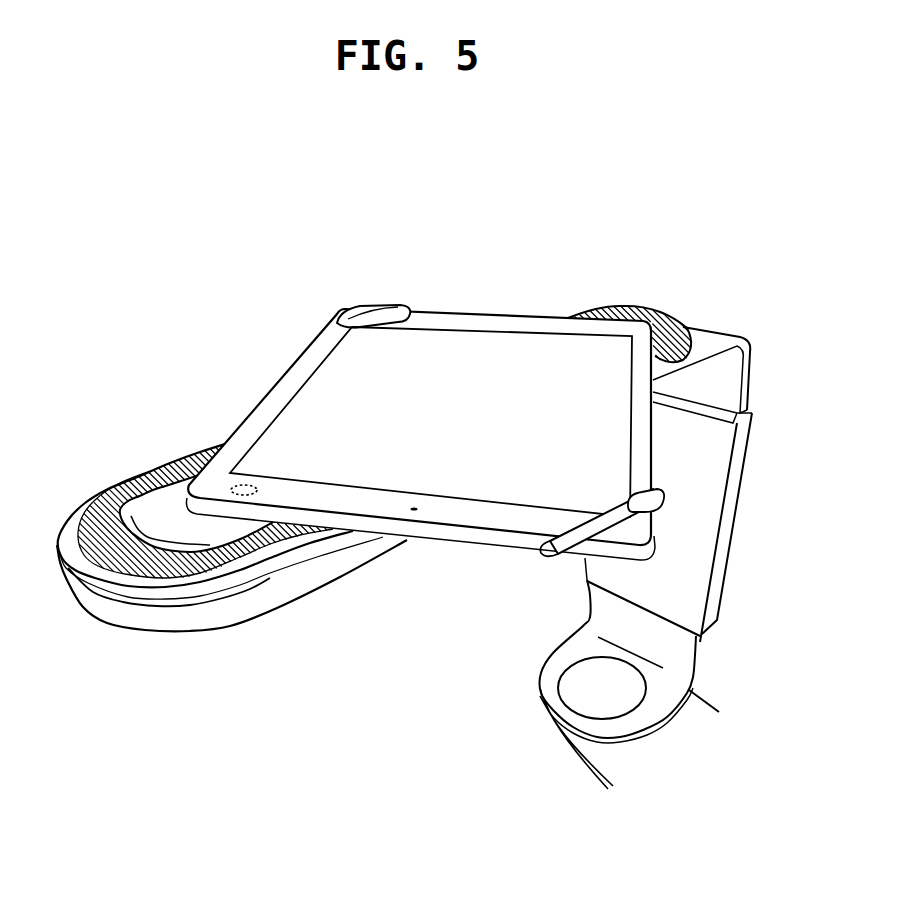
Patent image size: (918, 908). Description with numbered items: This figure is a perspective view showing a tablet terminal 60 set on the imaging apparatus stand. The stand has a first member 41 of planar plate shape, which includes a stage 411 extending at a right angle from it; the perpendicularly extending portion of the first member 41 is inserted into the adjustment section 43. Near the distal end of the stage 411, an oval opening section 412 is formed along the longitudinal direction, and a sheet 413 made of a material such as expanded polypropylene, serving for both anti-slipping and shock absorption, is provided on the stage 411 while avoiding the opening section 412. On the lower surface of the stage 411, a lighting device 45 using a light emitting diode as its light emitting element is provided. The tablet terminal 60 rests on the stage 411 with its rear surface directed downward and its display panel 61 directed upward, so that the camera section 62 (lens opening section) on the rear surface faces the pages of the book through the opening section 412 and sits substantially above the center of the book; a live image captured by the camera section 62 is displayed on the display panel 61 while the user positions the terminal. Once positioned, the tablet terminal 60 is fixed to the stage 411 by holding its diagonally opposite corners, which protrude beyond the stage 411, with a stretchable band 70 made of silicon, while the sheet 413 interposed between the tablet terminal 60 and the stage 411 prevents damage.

The first member 41 is at (668, 492).
The stage 411 is at (702, 342).
The adjustment section 43 is at (746, 468).
The lighting device 45 is at (218, 554).
The opening section 412 is at (157, 518).
The sheet 413 is at (85, 547).
The tablet terminal 60 is at (417, 381).
The display panel 61 is at (520, 357).
The camera section 62 is at (242, 484).
The stretchable band 70 is at (558, 550).